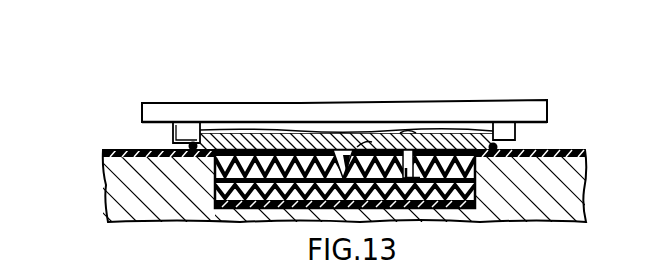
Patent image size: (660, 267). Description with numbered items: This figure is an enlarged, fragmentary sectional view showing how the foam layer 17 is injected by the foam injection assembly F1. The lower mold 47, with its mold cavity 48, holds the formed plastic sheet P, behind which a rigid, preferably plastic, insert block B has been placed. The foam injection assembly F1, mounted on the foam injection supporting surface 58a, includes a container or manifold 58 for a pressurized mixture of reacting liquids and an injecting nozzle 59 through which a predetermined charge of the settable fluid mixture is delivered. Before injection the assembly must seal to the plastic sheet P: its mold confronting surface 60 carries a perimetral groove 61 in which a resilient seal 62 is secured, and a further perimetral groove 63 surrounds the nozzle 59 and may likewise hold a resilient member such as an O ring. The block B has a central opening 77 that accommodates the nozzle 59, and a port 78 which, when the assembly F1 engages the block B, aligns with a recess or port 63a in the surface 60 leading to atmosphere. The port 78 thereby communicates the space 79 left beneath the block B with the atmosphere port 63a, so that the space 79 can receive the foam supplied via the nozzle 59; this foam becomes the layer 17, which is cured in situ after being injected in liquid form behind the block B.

The foam layer 17 is at (278, 190).
The lower mold 47 is at (562, 185).
The mold cavity 48 is at (212, 196).
The container or manifold 58 is at (508, 122).
The foam injection supporting surface 58a is at (487, 140).
The injecting nozzle 59 is at (341, 150).
The mold confronting surface 60 is at (203, 142).
The perimetral groove 61 is at (196, 140).
The resilient seal 62 is at (200, 142).
The perimetral groove 63 is at (331, 140).
The recess or port 63a is at (412, 135).
The central opening 77 is at (360, 147).
The port 78 is at (415, 175).
The space 79 is at (527, 155).
The insert block B is at (460, 147).
The plastic sheet P is at (137, 150).
The foam injection assembly F1 is at (560, 102).